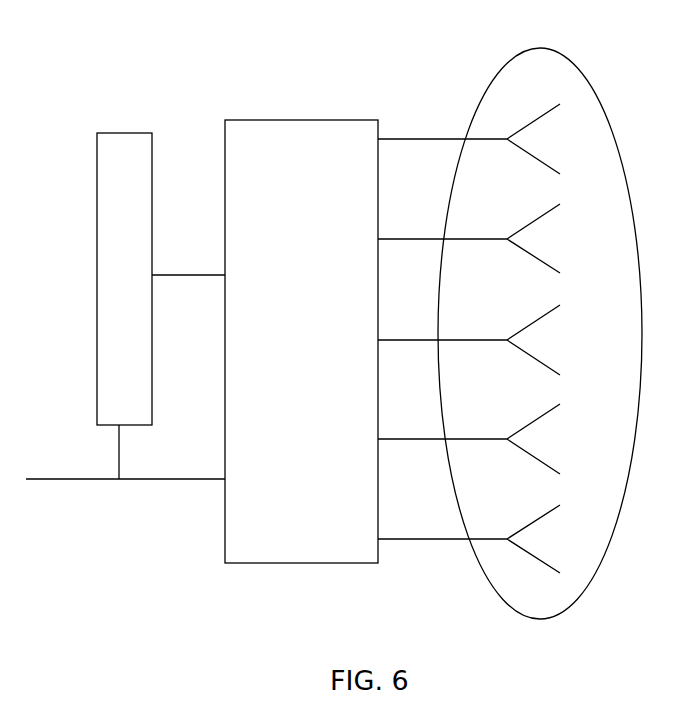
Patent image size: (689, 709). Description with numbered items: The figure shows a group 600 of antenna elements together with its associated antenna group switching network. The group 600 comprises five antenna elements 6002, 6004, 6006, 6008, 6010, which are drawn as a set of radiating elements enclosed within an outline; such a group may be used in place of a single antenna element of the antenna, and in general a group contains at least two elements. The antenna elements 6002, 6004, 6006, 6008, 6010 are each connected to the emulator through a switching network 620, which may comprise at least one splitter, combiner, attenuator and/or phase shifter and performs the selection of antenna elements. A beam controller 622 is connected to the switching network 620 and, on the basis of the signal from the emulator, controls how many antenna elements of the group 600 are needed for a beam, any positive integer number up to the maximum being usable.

The group of antenna elements 600 is at (538, 48).
The switching network 620 is at (287, 120).
The beam controller 622 is at (120, 133).
The antenna element 6002 is at (530, 152).
The antenna element 6004 is at (538, 258).
The antenna element 6006 is at (535, 357).
The antenna element 6008 is at (535, 457).
The antenna element 6010 is at (528, 555).